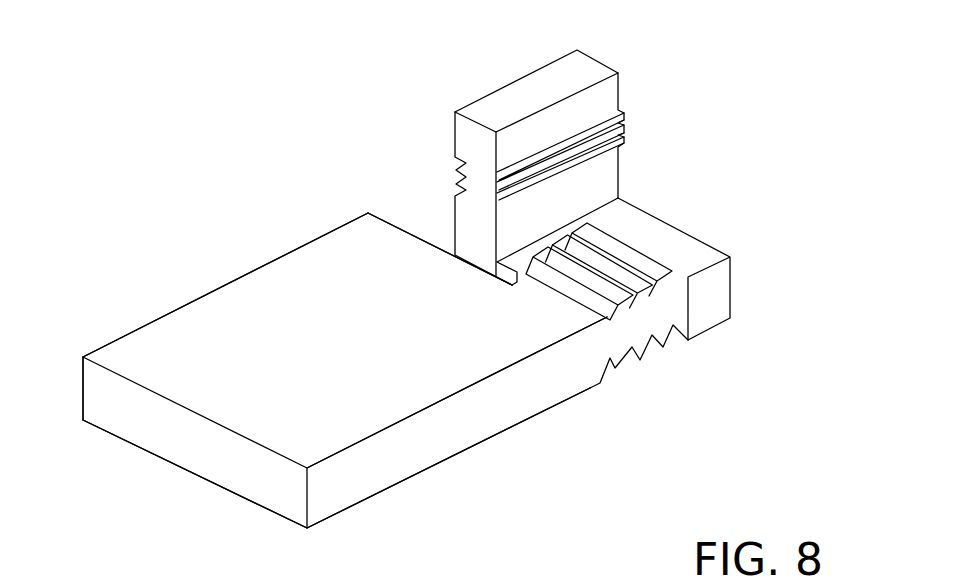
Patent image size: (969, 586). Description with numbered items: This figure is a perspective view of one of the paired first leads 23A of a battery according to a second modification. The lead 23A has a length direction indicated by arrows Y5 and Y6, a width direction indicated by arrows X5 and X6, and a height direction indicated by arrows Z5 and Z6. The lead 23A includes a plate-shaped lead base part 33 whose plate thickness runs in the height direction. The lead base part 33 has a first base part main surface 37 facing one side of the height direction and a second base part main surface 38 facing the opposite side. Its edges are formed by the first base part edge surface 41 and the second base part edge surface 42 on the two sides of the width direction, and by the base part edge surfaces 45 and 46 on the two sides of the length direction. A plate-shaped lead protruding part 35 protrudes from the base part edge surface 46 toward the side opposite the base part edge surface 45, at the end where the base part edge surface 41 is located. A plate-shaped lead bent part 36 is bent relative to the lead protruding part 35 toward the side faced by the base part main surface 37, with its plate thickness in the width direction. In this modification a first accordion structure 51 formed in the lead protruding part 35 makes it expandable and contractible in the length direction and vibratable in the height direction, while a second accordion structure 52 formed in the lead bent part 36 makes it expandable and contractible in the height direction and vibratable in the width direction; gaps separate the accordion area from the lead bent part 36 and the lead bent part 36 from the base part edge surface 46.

The lead 23A is at (383, 31).
The lead base part 33 is at (255, 293).
The lead protruding part 35 is at (695, 258).
The lead bent part 36 is at (582, 72).
The first base part main surface 37 is at (298, 268).
The second base part main surface 38 is at (387, 495).
The first base part edge surface 41 is at (463, 433).
The second base part edge surface 42 is at (148, 323).
The base part edge surface 45 is at (263, 493).
The base part edge surface 46 is at (395, 228).
The first accordion structure 51 is at (633, 300).
The second accordion structure 52 is at (630, 122).
The width direction arrow X5 is at (149, 541).
The width direction arrow X6 is at (77, 507).
The length direction arrow Y5 is at (513, 508).
The length direction arrow Y6 is at (576, 479).
The height direction arrow Z5 is at (813, 210).
The height direction arrow Z6 is at (813, 277).